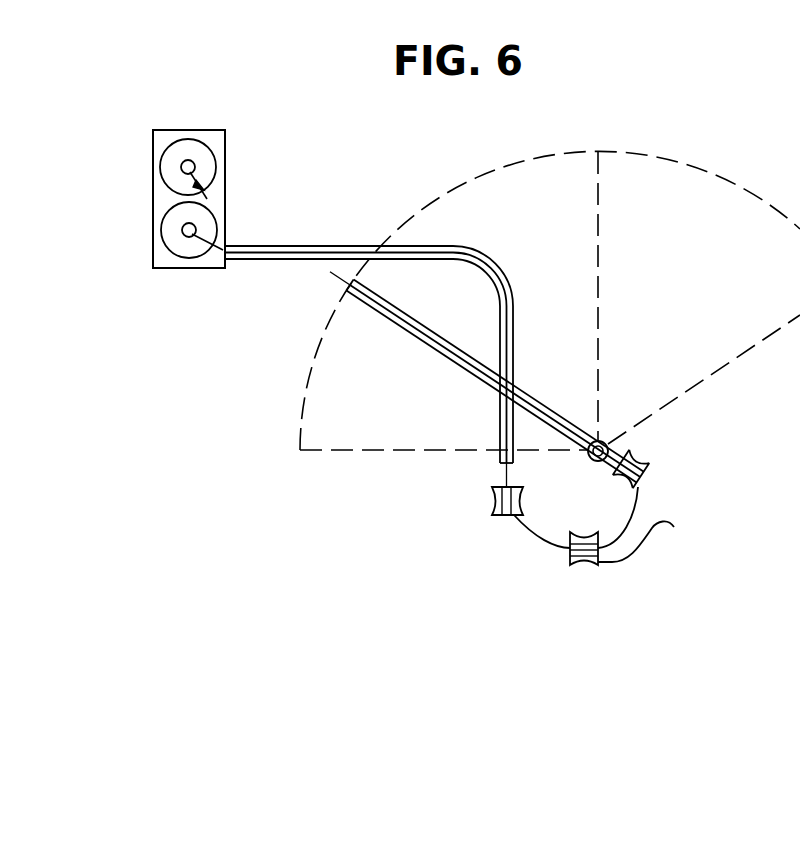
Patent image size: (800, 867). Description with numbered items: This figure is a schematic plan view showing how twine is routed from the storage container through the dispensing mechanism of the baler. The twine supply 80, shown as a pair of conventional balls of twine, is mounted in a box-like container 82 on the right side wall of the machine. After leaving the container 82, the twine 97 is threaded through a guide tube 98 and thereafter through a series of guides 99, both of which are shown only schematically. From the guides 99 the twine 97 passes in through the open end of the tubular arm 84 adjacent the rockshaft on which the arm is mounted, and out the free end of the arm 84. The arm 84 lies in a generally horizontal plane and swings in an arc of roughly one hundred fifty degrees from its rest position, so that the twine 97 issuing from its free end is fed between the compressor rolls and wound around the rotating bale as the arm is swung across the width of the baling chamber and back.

The twine supply 80 is at (212, 220).
The box-like container 82 is at (181, 266).
The guide tube 98 is at (329, 246).
The tubular arm 84 is at (451, 346).
The twine 97 is at (530, 534).
The guides 99 is at (650, 464).